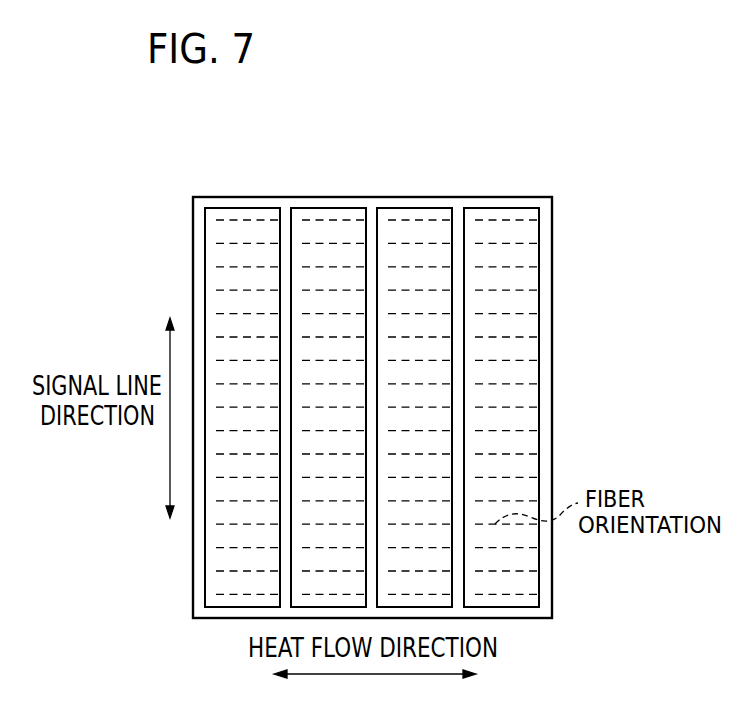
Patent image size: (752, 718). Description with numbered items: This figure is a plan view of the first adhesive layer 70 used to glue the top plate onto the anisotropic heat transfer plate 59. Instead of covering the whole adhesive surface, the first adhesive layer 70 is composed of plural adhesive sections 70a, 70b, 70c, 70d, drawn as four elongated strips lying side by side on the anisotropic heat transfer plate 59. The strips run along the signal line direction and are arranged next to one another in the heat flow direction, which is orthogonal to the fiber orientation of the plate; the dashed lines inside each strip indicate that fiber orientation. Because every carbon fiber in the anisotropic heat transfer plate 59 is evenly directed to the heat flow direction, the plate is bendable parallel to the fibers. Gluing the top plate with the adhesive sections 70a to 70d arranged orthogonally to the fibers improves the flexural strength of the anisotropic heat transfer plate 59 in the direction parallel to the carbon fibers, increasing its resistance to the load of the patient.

The anisotropic heat transfer plate 59 is at (552, 373).
The first adhesive layer 70 is at (535, 133).
The adhesive section 70a is at (242, 214).
The adhesive section 70b is at (328, 214).
The adhesive section 70c is at (413, 214).
The adhesive section 70d is at (502, 214).